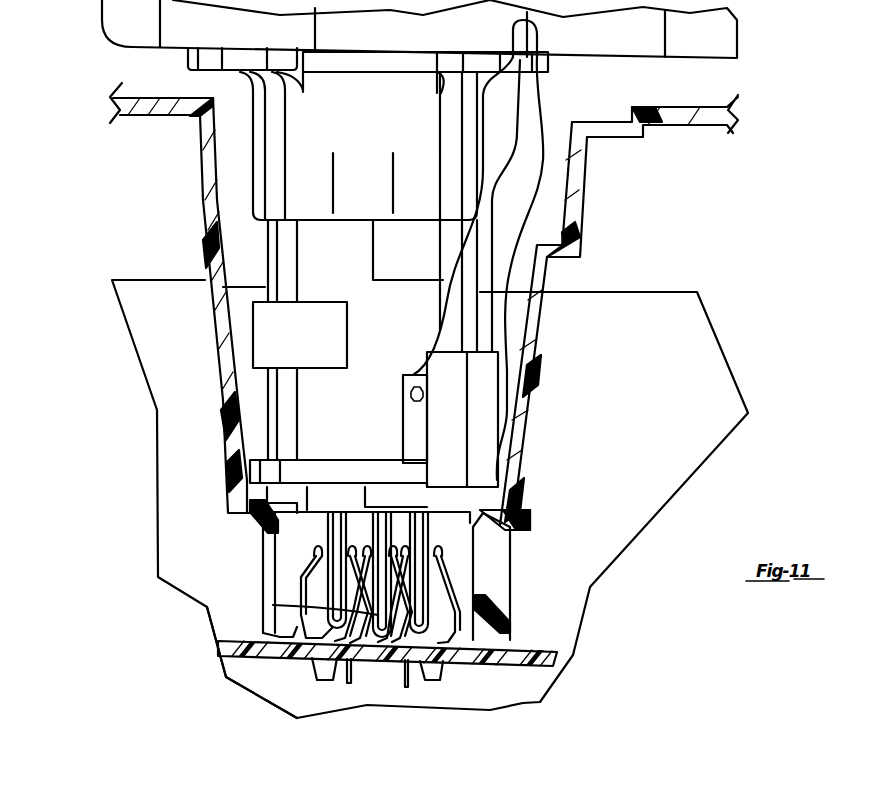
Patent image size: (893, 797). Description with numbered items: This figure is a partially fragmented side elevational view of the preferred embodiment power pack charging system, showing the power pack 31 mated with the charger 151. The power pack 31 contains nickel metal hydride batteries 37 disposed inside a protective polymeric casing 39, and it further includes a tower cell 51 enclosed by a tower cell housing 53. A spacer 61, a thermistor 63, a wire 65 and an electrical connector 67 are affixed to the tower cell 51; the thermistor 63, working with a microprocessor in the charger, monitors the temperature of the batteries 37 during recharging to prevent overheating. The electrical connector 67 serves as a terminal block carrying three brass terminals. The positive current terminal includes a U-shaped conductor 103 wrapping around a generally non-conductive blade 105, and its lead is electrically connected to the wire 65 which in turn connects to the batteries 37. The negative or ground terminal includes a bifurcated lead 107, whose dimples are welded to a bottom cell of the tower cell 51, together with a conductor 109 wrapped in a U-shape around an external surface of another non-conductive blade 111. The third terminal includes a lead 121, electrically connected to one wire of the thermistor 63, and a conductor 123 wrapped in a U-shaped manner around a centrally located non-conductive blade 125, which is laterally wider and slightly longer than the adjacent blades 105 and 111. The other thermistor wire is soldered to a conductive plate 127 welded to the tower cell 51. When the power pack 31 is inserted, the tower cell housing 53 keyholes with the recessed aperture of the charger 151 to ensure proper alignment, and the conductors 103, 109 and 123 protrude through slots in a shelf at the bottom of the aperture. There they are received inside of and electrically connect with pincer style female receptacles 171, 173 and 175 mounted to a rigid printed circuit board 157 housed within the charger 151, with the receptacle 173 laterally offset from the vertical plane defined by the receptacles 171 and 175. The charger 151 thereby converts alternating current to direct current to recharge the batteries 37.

The power pack 31 is at (743, 165).
The nickel metal hydride batteries 37 is at (723, 35).
The protective polymeric casing 39 is at (687, 123).
The tower cell 51 is at (290, 262).
The tower cell housing 53 is at (217, 325).
The spacer 61 is at (386, 149).
The thermistor 63 is at (530, 227).
The 16 AWG wire 65 is at (497, 183).
The electrical connector 67 is at (480, 500).
The U-shaped conductor 103 is at (295, 535).
The non-conductive blade 105 is at (427, 647).
The bifurcated lead 107 is at (238, 510).
The conductor 109 is at (300, 534).
The non-conductive blade 111 is at (270, 667).
The lead 121 is at (493, 450).
The conductor 123 is at (370, 667).
The non-conductive blade 125 is at (365, 645).
The conductive plate 127 is at (410, 407).
The charger 151 is at (680, 373).
The printed circuit board 157 is at (557, 658).
The pincer style female receptacle 171 is at (273, 605).
The pincer style female receptacle 173 is at (377, 653).
The pincer style female receptacle 175 is at (470, 647).